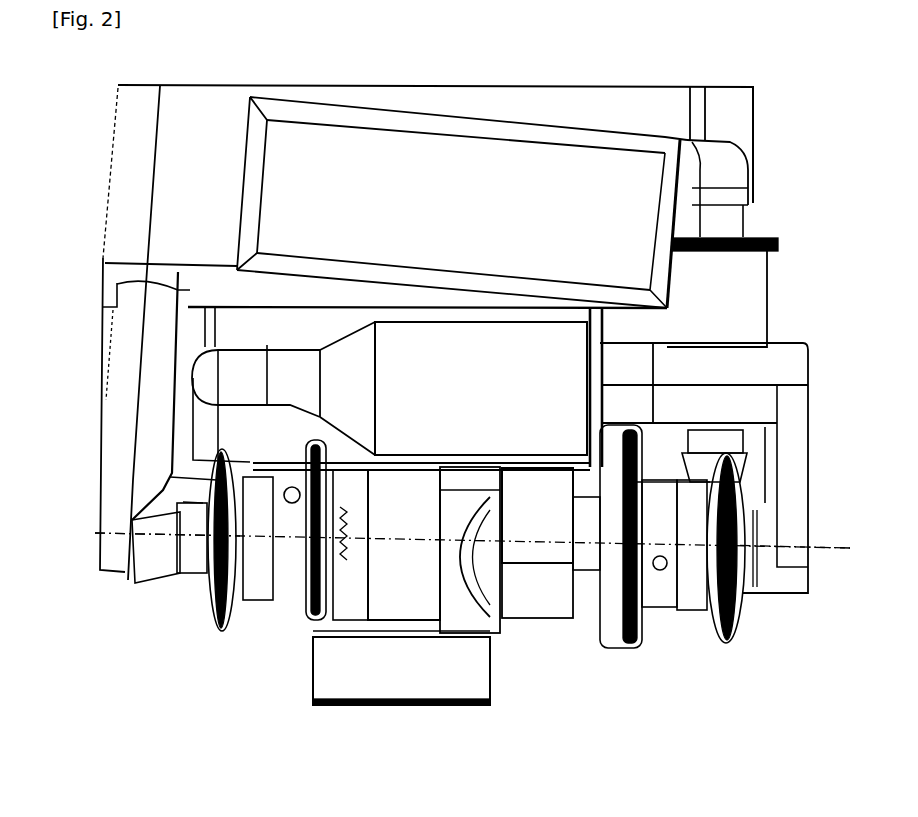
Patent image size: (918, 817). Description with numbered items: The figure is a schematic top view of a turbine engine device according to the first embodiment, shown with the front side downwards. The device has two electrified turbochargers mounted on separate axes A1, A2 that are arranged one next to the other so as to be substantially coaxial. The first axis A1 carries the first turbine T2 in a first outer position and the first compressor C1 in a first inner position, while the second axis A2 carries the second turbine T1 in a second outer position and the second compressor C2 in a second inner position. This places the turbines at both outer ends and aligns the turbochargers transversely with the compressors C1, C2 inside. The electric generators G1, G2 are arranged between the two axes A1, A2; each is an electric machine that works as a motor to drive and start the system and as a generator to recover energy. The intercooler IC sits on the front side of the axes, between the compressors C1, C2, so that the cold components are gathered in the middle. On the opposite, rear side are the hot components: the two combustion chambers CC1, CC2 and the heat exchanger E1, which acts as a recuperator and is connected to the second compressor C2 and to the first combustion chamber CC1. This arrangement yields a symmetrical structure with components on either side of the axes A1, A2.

The heat exchanger E1 is at (459, 206).
The first combustion chamber CC1 is at (739, 313).
The second combustion chamber CC2 is at (505, 385).
The electric generator G1 is at (549, 520).
The electric generator G2 is at (413, 530).
The intercooler IC is at (420, 673).
The second turbine T1 is at (745, 628).
The first turbine T2 is at (205, 612).
The first compressor C1 is at (313, 608).
The second compressor C2 is at (638, 625).
The first axis A1 is at (95, 530).
The second axis A2 is at (823, 553).